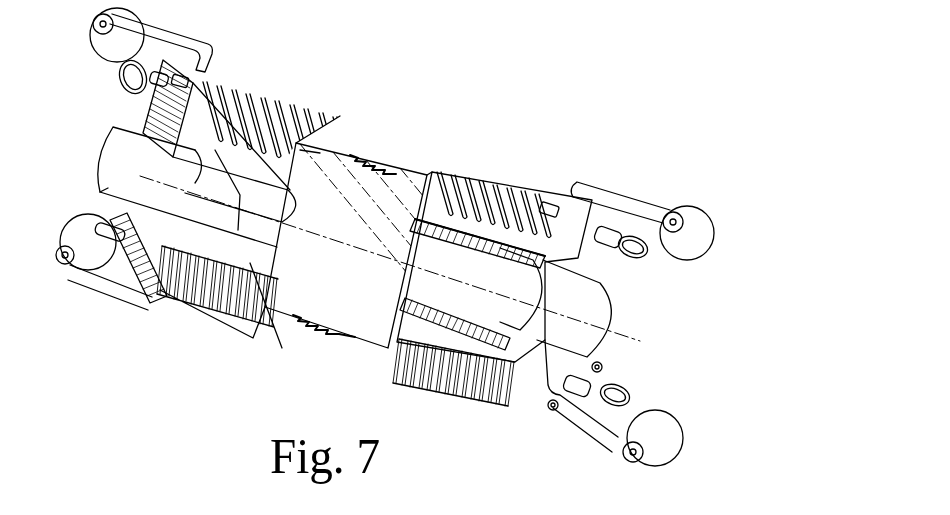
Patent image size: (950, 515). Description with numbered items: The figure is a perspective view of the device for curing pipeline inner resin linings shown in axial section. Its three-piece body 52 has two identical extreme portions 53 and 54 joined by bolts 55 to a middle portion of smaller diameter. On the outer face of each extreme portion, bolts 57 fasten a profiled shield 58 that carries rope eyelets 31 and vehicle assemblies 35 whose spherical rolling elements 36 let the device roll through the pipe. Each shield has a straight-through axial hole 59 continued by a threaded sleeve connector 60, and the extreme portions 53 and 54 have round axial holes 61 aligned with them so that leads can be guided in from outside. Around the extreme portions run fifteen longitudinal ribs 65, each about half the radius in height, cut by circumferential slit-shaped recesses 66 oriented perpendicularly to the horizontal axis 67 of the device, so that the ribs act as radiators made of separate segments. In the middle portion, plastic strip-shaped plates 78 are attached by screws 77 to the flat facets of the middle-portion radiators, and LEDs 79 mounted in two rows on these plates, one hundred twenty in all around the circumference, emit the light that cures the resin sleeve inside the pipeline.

The rope eyelet 31 is at (157, 85).
The vehicle assembly 35 is at (105, 278).
The spherical rolling element 36 is at (67, 232).
The body 52 is at (407, 337).
The extreme portion 53 is at (208, 143).
The extreme portion 54 is at (478, 247).
The bolt 55 is at (482, 343).
The bolt 57 is at (183, 82).
The profiled shield 58 is at (180, 68).
The axial hole 59 is at (147, 153).
The threaded sleeve connector 60 is at (110, 192).
The round axial hole 61 is at (197, 208).
The longitudinal rib 65 is at (227, 310).
The circumferential slit-shaped recess 66 is at (313, 137).
The horizontal axis 67 is at (238, 205).
The screw 77 is at (347, 148).
The strip-shaped plate 78 is at (407, 170).
The LED 79 is at (423, 140).